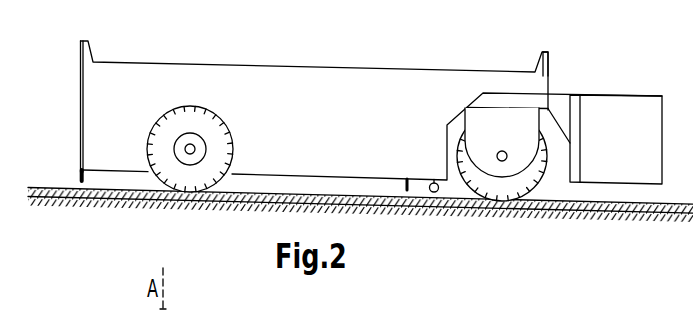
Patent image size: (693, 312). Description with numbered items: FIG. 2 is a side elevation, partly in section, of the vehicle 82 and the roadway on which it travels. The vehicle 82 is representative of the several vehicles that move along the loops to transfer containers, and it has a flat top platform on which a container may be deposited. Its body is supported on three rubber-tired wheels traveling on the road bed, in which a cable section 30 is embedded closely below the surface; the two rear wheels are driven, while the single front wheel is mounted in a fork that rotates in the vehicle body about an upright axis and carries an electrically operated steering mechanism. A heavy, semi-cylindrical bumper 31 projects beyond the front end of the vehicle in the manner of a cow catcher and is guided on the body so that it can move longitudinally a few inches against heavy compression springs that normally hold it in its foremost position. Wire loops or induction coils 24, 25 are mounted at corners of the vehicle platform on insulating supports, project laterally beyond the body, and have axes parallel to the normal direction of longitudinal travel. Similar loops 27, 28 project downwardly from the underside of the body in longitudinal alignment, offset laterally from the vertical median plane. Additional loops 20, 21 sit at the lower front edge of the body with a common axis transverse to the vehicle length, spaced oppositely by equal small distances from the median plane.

The induction loop 20 is at (455, 217).
The induction loop 21 is at (433, 193).
The induction coil 24 is at (80, 44).
The induction coil 25 is at (550, 60).
The induction loop 27 is at (80, 173).
The induction loop 28 is at (408, 191).
The cable section 30 is at (190, 176).
The semi-cylindrical bumper 31 is at (622, 107).
The vehicle 82 is at (355, 66).